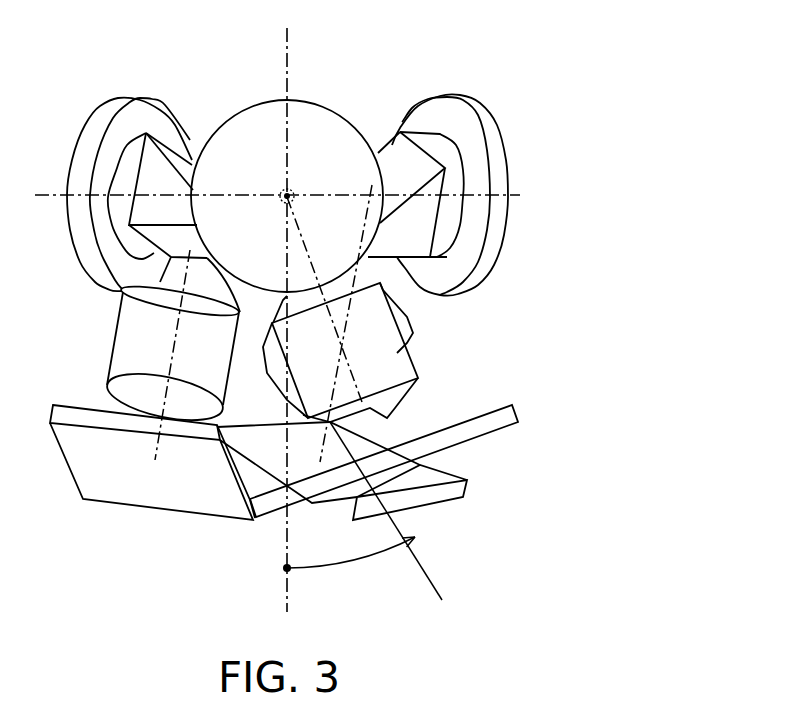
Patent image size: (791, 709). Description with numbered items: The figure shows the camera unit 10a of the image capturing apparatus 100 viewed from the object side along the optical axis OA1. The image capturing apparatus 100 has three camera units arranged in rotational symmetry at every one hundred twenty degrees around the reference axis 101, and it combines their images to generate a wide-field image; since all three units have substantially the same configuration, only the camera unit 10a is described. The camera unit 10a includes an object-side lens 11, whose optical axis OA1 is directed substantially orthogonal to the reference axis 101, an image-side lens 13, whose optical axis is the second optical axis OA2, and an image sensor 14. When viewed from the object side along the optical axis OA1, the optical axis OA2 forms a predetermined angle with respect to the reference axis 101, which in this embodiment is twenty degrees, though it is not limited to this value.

The image capturing apparatus 100 is at (566, 30).
The reference axis 101 is at (287, 45).
The camera unit 10a is at (371, 260).
The object-side lens 11 is at (330, 108).
The first optical axis OA1 is at (293, 193).
The second optical axis OA2 is at (313, 265).
The image-side lens 13 is at (400, 355).
The image sensor 14 is at (483, 407).